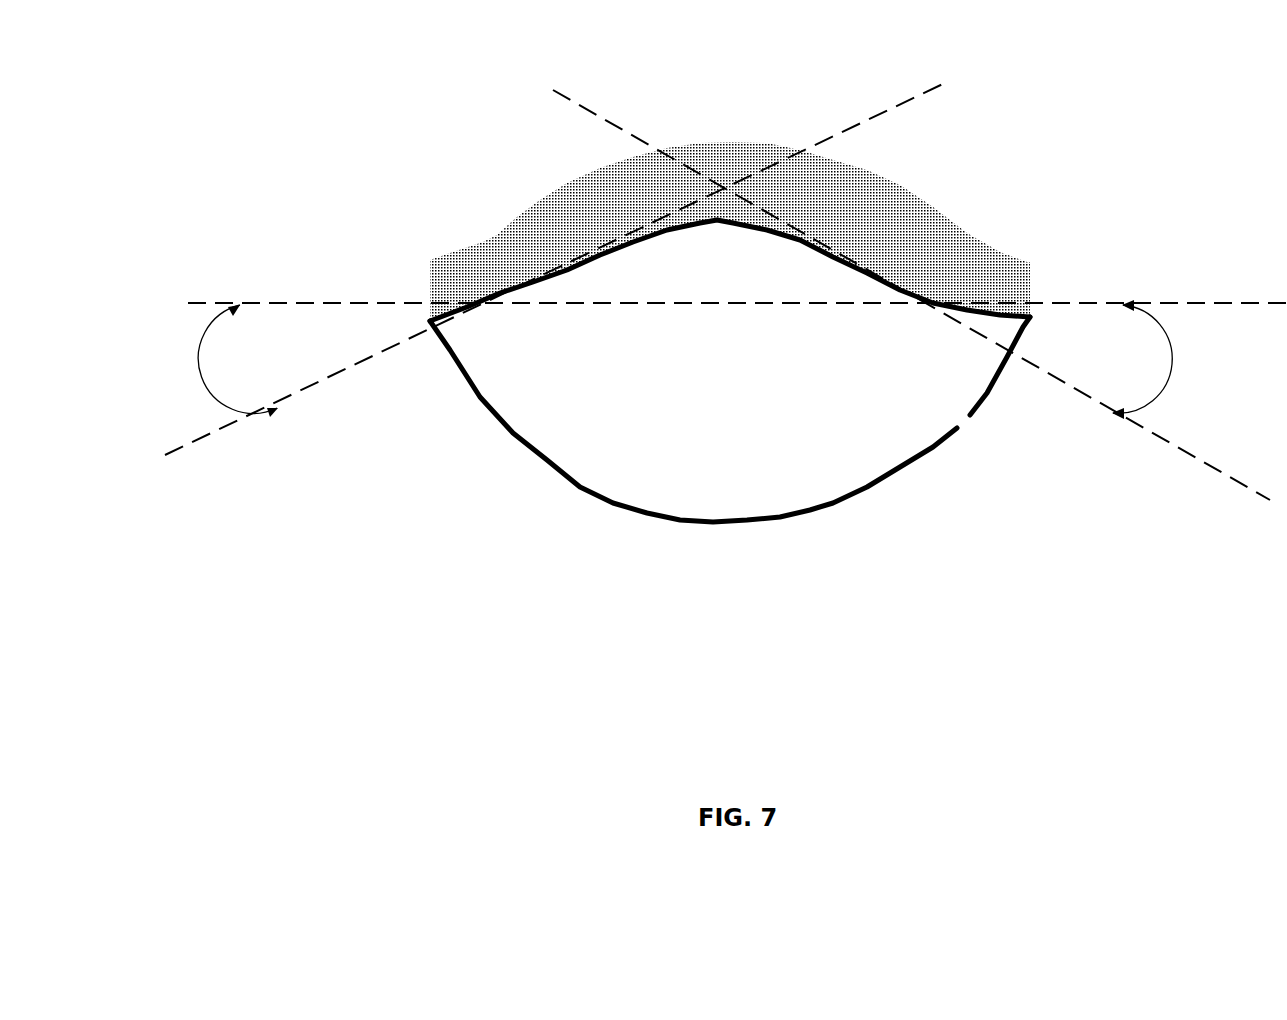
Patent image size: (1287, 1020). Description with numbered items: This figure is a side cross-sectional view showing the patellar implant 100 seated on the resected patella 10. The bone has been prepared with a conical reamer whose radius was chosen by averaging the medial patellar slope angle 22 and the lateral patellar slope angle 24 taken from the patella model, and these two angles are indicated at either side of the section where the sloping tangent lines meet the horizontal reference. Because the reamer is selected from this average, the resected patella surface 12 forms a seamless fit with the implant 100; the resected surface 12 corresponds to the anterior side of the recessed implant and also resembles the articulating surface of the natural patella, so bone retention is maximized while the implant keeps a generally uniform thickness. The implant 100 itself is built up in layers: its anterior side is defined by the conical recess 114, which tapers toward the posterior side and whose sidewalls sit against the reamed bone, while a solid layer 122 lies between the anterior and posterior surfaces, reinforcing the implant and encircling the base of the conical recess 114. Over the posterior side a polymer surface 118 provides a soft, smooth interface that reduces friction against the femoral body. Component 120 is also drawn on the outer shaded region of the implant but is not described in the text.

The resected patella 10 is at (466, 469).
The resected patella surface 12 is at (727, 228).
The medial patellar slope angle 22 is at (216, 361).
The lateral patellar slope angle 24 is at (1167, 359).
The patellar implant 100 is at (480, 106).
The conical recess 114 is at (680, 254).
The polymer surface 118 is at (552, 227).
The second portion 120 is at (958, 257).
The solid layer 122 is at (1027, 282).